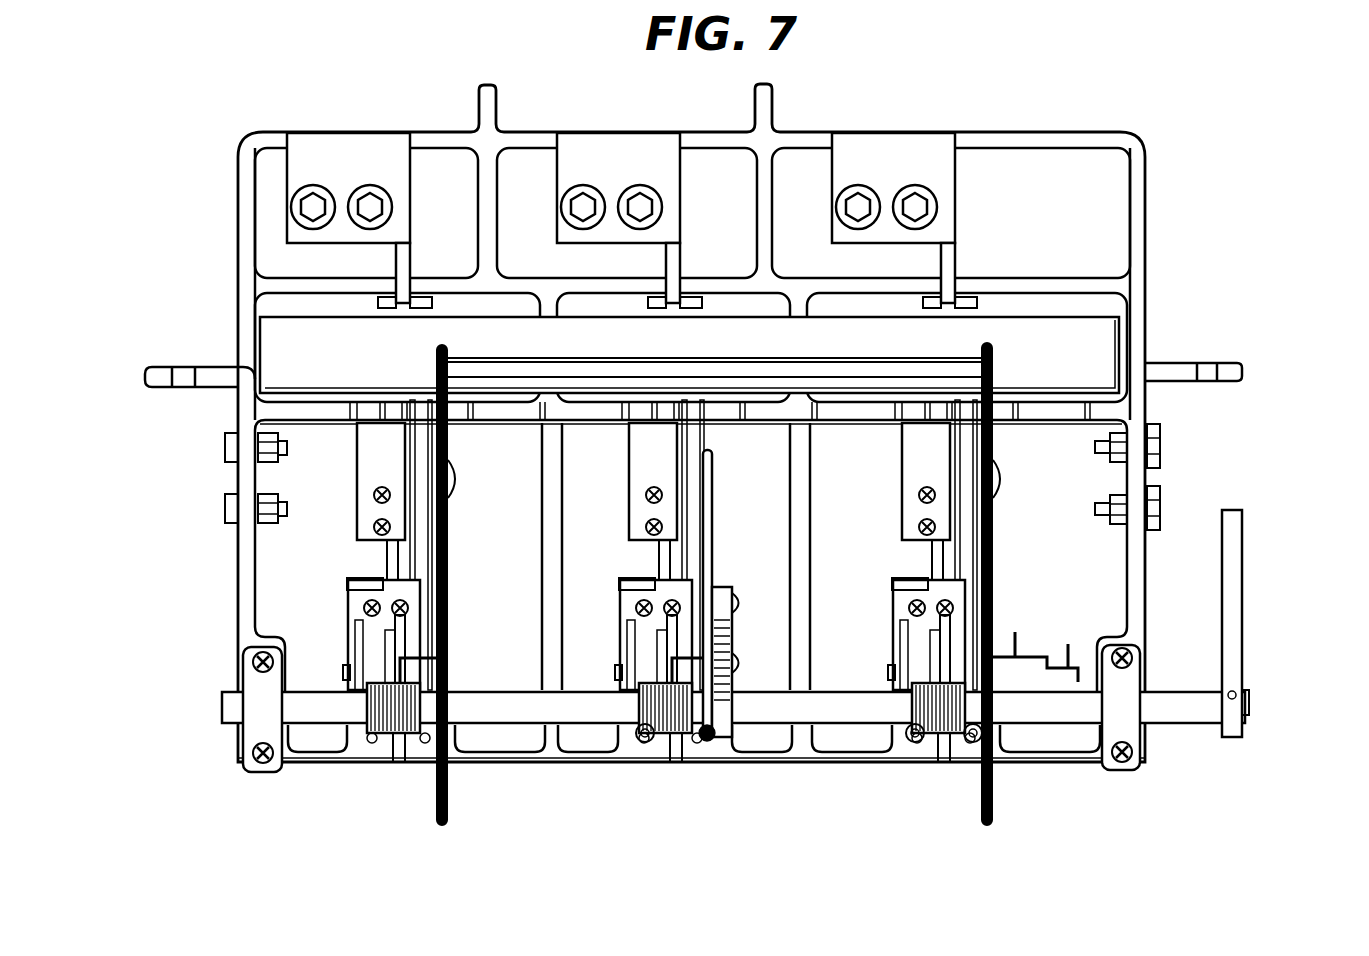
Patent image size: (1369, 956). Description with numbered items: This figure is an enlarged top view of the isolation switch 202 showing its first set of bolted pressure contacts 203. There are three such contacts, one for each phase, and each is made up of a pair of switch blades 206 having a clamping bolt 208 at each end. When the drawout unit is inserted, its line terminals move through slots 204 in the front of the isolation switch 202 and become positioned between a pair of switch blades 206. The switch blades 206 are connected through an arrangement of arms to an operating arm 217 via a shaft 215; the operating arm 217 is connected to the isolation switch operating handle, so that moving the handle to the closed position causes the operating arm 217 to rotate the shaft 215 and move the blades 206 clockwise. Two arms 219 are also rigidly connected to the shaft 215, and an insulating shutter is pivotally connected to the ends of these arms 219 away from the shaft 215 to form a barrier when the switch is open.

The isolation switch 202 is at (1145, 220).
The bolted pressure contacts 203 is at (336, 617).
The slots 204 is at (398, 771).
The switch blades 206 is at (407, 567).
The clamping bolt 208 is at (345, 674).
The shaft 215 is at (1182, 700).
The operating arm 217 is at (1244, 632).
The arms 219 is at (446, 825).